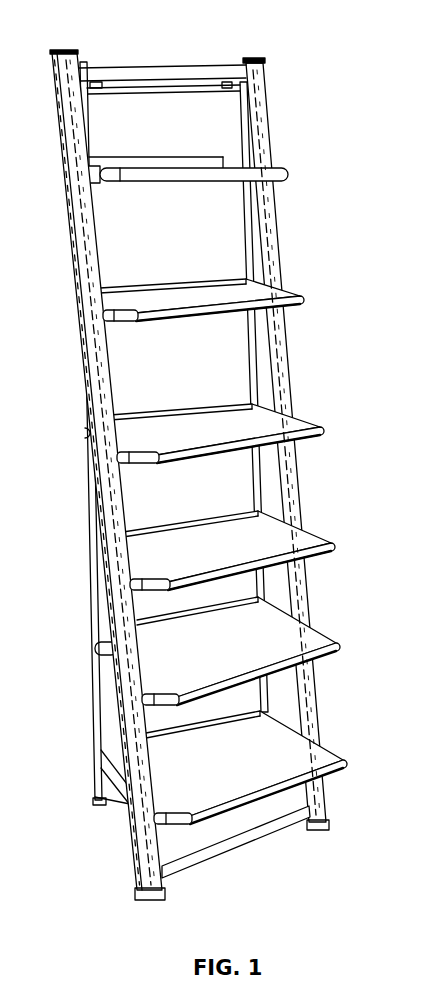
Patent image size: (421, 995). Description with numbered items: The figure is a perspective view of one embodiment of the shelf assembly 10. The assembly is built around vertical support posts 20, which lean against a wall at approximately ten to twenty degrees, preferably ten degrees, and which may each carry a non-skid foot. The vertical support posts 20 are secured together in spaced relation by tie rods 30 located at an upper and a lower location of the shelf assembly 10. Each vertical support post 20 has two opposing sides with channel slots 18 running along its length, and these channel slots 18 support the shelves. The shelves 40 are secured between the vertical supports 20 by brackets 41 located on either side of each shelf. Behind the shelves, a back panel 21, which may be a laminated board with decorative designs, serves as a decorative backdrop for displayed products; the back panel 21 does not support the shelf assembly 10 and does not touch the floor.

The shelf assembly 10 is at (212, 465).
The channel slots 18 is at (274, 353).
The vertical support posts 20 is at (292, 478).
The back panel 21 is at (100, 691).
The tie rods 30 is at (180, 66).
The shelves 40 is at (295, 302).
The brackets 41 is at (103, 309).